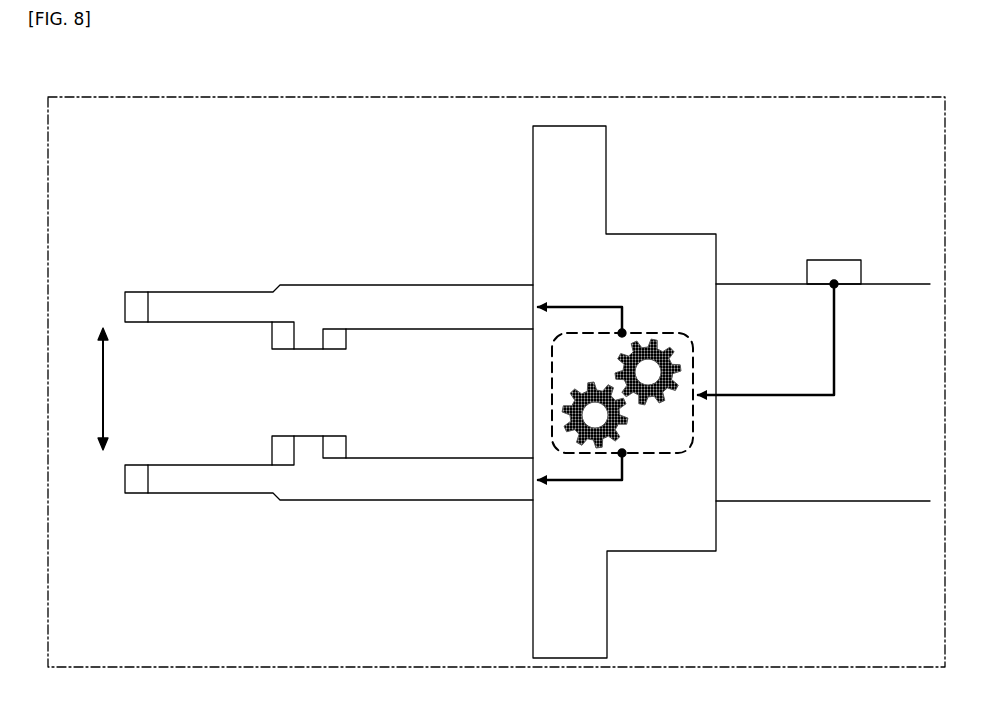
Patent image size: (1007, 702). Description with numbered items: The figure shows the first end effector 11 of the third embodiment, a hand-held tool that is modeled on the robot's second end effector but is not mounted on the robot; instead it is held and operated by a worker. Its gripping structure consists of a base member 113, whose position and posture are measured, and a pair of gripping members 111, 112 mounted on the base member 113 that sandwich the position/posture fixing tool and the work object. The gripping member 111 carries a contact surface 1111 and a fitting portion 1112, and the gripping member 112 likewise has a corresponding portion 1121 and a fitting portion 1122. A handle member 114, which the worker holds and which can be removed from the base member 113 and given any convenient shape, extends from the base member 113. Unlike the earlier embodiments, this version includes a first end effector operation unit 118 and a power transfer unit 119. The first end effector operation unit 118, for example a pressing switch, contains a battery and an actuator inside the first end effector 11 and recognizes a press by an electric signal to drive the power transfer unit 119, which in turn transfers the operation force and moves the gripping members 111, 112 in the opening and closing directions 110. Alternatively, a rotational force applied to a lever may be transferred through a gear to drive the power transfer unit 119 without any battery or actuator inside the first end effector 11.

The first end effector 11 is at (808, 97).
The opening and closing directions 110 is at (103, 355).
The gripping member 111 is at (208, 291).
The contact surface 1111 is at (207, 324).
The fitting portion 1112 is at (346, 336).
The gripping member 112 is at (205, 501).
The first stopper portion of second wire 1121 is at (208, 464).
The fitting portion 1122 is at (346, 447).
The base member 113 is at (533, 162).
The handle member 114 is at (838, 503).
The first end effector operation unit 118 is at (834, 260).
The power transfer unit 119 is at (665, 456).